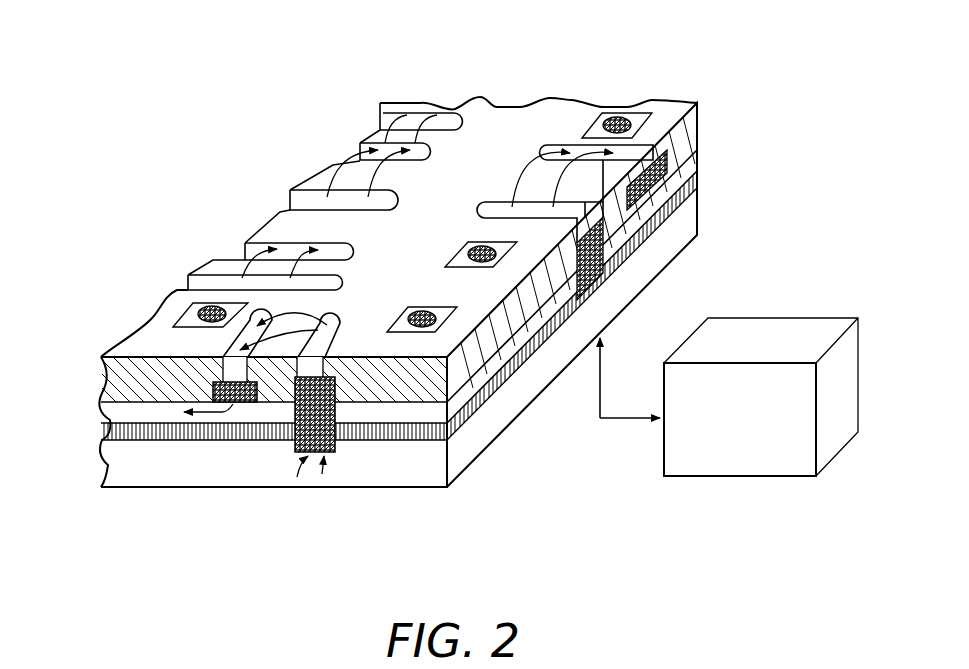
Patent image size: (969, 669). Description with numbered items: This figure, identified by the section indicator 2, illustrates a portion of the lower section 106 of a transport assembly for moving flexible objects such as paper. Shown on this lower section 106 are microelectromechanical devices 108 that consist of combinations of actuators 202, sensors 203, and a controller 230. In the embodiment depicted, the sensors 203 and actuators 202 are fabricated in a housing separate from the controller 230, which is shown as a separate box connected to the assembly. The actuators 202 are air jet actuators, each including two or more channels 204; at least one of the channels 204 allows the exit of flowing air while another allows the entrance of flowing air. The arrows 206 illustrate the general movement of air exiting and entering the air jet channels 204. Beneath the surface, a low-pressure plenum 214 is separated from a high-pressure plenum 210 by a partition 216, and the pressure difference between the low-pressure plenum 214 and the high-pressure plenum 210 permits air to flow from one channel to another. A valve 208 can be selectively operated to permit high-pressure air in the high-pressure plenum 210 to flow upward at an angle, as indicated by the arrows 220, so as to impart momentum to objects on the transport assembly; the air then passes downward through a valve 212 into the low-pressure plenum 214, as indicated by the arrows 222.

The section line 2 is at (630, 103).
The lower section 106 is at (500, 123).
The microelectromechanical devices 108 is at (355, 75).
The actuators 202 is at (277, 188).
The sensors 203 is at (187, 323).
The channels 204 is at (317, 330).
The arrows 206 is at (303, 315).
The valve 208 is at (300, 452).
The high-pressure plenum 210 is at (683, 211).
The valve 212 is at (248, 400).
The low-pressure plenum 214 is at (688, 160).
The partition 216 is at (120, 429).
The arrows 220 is at (325, 474).
The arrows 222 is at (233, 407).
The controller 230 is at (797, 323).